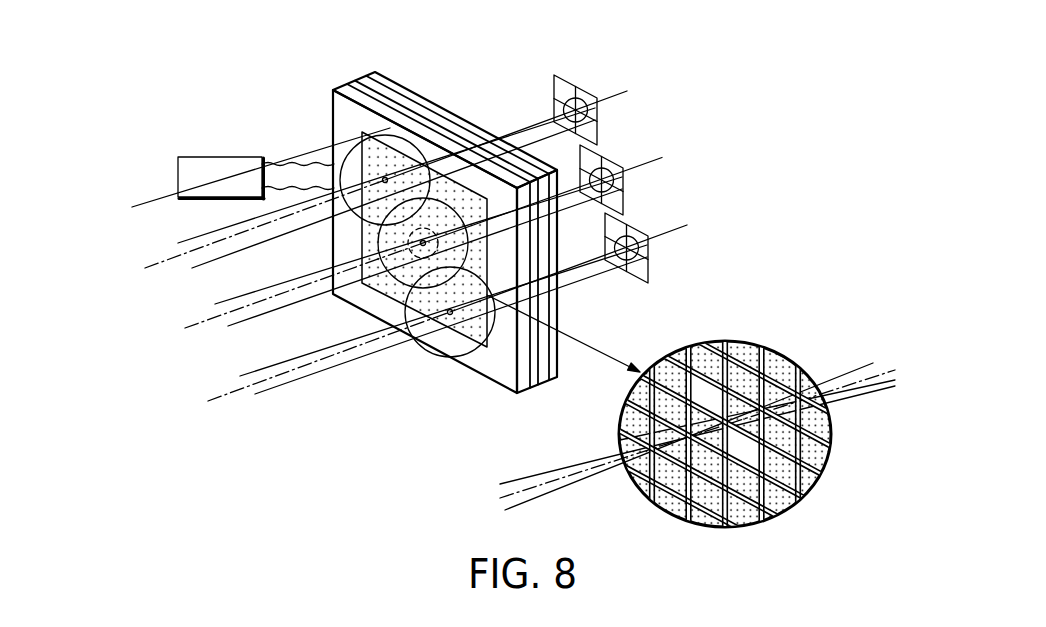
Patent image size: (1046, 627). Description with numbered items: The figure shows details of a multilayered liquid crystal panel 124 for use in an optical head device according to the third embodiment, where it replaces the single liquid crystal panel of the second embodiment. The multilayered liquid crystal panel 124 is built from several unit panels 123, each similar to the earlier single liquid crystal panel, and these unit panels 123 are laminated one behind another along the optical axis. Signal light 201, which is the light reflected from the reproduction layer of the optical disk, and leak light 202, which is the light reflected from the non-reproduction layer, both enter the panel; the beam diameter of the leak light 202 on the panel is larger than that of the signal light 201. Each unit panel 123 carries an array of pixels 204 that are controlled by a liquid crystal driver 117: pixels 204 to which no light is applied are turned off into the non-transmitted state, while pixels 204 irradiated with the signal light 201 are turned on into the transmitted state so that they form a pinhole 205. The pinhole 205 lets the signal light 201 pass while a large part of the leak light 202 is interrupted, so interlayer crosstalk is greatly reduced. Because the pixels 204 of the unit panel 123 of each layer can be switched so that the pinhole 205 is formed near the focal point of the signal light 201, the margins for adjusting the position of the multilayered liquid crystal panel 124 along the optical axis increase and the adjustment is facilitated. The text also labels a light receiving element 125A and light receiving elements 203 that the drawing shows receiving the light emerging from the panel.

The liquid crystal driver 117 is at (214, 157).
The unit panel 123 is at (465, 329).
The multilayered liquid crystal panel 124 is at (423, 90).
The light receiving element 125A is at (618, 198).
The signal light 201 is at (300, 278).
The leak light 202 is at (150, 205).
The light receiving elements 203 is at (645, 160).
The pixels 204 is at (740, 421).
The pinhole 205 is at (745, 457).